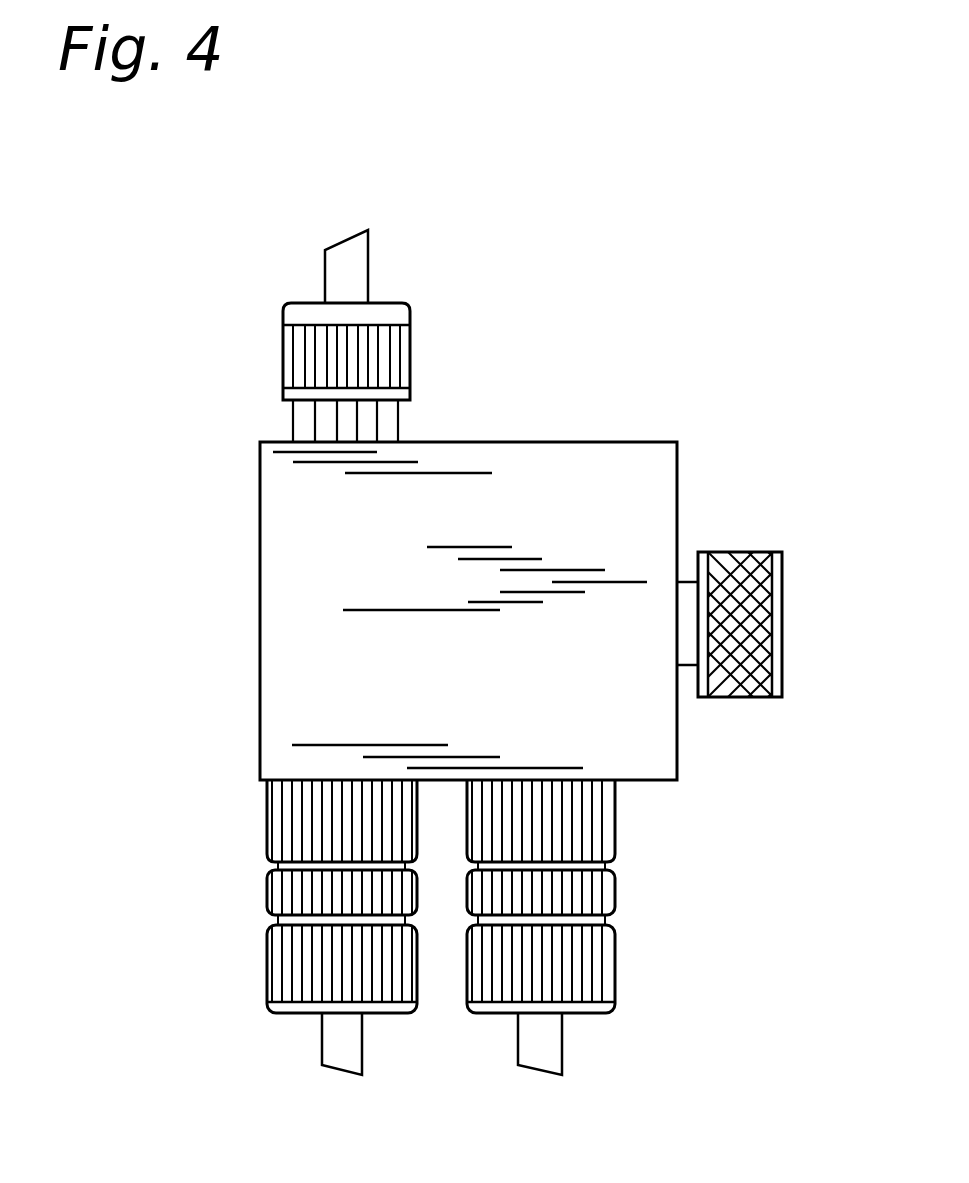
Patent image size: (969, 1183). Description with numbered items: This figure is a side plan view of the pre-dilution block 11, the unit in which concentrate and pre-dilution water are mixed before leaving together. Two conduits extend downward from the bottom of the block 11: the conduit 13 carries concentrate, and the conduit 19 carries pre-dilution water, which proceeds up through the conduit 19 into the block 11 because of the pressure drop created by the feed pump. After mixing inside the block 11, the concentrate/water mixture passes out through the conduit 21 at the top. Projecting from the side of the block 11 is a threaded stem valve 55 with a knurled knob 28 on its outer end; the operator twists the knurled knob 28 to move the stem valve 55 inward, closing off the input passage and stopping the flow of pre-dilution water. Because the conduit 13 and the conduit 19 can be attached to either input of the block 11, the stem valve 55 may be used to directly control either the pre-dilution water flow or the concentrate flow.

The pre-dilution block 11 is at (565, 230).
The conduit 13 is at (343, 1070).
The conduit 19 is at (562, 1070).
The conduit 21 is at (325, 250).
The knurled knob 28 is at (767, 550).
The stem valve 55 is at (688, 578).